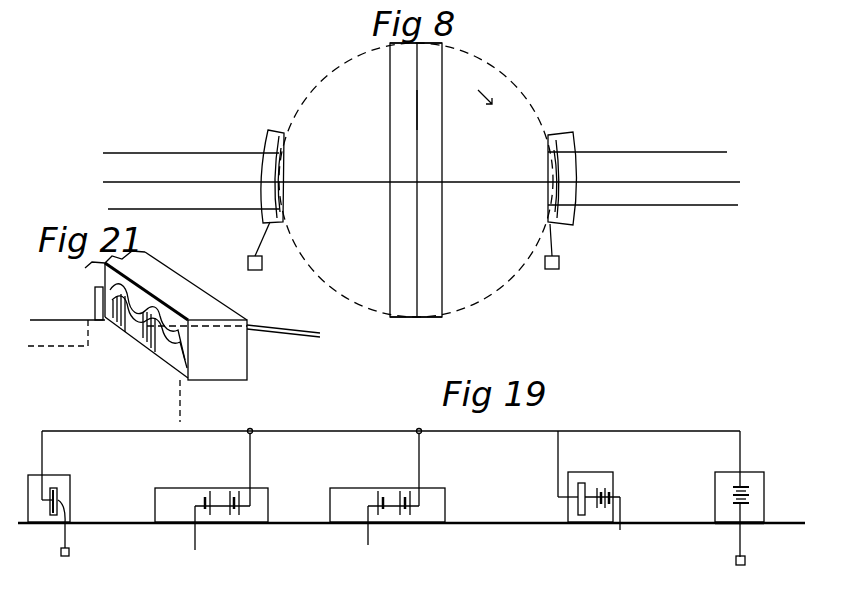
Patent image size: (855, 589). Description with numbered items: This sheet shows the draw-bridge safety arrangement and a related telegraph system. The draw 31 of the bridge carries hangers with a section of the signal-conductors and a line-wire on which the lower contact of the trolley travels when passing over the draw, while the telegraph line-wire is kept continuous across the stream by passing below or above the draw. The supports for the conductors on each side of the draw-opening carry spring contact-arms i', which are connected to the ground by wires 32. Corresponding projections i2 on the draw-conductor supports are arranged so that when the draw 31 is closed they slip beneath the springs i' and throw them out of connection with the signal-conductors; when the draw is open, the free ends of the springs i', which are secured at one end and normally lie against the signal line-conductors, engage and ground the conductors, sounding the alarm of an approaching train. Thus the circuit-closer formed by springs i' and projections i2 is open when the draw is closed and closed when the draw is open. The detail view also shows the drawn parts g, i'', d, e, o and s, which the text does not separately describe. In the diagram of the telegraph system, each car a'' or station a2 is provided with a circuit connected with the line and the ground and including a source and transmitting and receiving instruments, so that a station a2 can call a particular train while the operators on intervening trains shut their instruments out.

In FIG. 8, the contact bar / insulating strip g is at (424, 327).
In FIG. 21, the contact bar / insulating strip g is at (166, 315).
In FIG. 8, the draw 31 is at (427, 110).
In FIG. 8, the projections i2 is at (388, 45).
In FIG. 21, the projections i2 is at (94, 292).
In FIG. 8, the spring contact-arms i' is at (419, 177).
In FIG. 21, the contact spring i'' is at (148, 326).
In FIG. 8, the wires 32 is at (262, 239).
In FIG. 21, the wires 32 is at (188, 392).
In FIG. 8, the track / line wire d is at (389, 238).
In FIG. 21, the track / line wire d is at (262, 329).
In FIG. 19, the track / line wire d is at (698, 526).
In FIG. 8, the overhead wire e is at (410, 292).
In FIG. 19, the overhead wire e is at (166, 433).
In FIG. 19, the contact point o is at (250, 456).
In FIG. 19, the car instrument a'' is at (387, 504).
In FIG. 19, the station a2 is at (410, 516).
In FIG. 19, the station rail section s is at (738, 533).